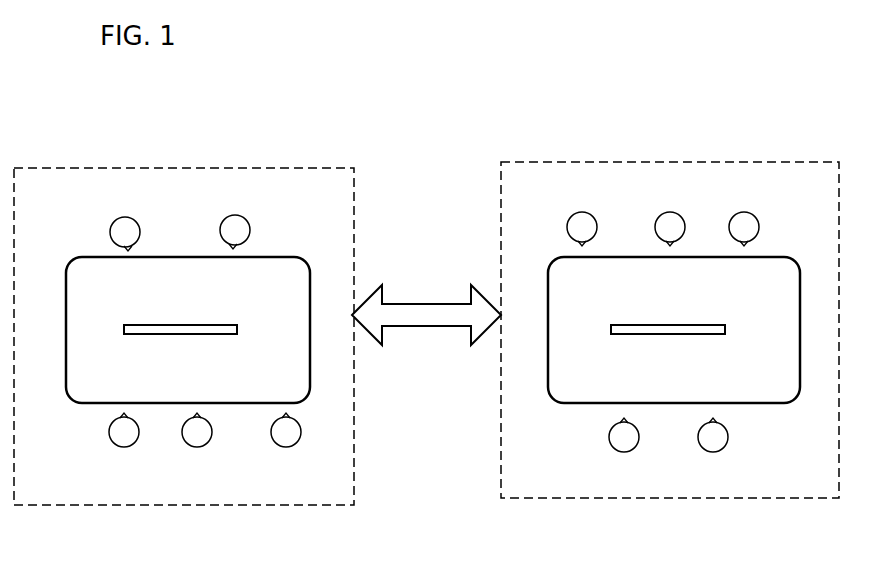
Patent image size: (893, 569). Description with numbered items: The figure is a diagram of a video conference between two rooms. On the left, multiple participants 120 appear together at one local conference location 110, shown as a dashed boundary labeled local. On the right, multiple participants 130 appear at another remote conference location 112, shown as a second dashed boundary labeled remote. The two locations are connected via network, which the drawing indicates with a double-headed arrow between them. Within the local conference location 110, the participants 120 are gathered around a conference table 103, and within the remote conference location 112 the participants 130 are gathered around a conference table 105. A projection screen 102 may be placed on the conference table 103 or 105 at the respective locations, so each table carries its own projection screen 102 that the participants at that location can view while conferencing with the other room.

The projection screen 102 is at (238, 330).
The conference table 103 is at (110, 398).
The conference table 105 is at (607, 398).
The local conference location 110 is at (72, 488).
The remote conference location 112 is at (556, 480).
The participants 120 is at (115, 216).
The participants 130 is at (567, 212).